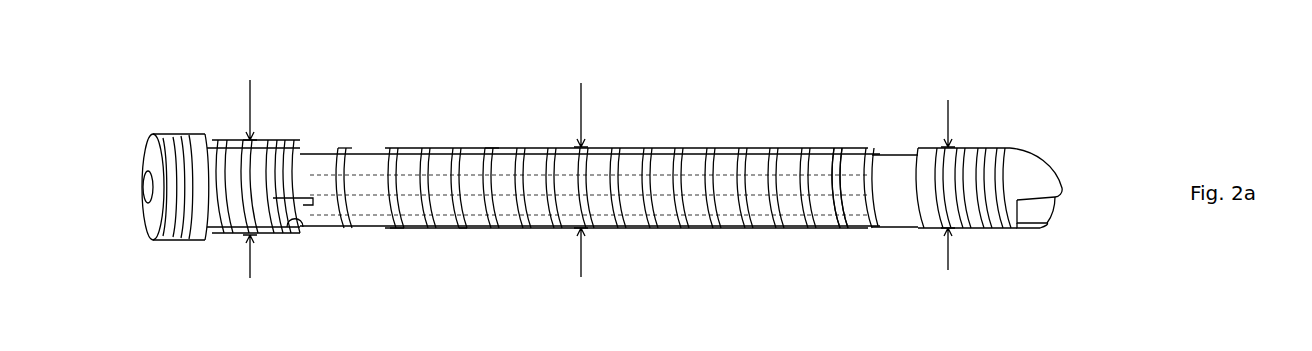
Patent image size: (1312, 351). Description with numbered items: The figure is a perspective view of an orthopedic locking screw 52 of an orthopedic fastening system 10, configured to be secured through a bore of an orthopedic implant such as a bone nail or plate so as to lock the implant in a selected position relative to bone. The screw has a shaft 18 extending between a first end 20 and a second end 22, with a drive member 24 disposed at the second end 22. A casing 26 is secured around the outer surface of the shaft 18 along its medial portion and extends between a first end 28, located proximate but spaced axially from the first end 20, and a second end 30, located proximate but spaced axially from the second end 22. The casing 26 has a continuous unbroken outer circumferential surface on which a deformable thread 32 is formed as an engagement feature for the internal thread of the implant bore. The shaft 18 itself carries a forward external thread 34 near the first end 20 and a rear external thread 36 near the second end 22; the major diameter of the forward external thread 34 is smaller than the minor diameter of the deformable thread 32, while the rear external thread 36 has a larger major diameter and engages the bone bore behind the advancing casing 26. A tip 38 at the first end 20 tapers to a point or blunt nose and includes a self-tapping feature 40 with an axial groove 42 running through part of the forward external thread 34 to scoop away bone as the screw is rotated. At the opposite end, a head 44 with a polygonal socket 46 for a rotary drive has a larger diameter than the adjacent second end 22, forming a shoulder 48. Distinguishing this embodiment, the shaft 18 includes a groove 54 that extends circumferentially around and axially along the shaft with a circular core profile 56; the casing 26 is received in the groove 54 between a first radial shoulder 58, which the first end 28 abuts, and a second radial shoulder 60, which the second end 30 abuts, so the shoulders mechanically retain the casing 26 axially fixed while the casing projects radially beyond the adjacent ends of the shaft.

The orthopedic fastening system 10 is at (1045, 85).
The shaft 18 is at (327, 160).
The first end of the shaft 20 is at (1057, 190).
The second end of the shaft 22 is at (213, 224).
The drive member 24 is at (142, 170).
The casing 26 is at (748, 157).
The first end of the casing 28 is at (870, 227).
The second end of the casing 30 is at (343, 228).
The deformable thread 32 is at (463, 228).
The forward external thread 34 is at (997, 228).
The rear external thread 36 is at (293, 228).
The tip 38 is at (1037, 193).
The self-tapping feature 40 is at (1050, 160).
The axial groove 42 is at (1037, 217).
The head 44 is at (180, 140).
The polygonal socket 46 is at (148, 197).
The shoulder 48 is at (207, 143).
The orthopedic locking screw 52 is at (492, 158).
The groove 54 is at (847, 173).
The circular core profile 56 is at (852, 230).
The first radial shoulder 58 is at (870, 180).
The second radial shoulder 60 is at (343, 157).